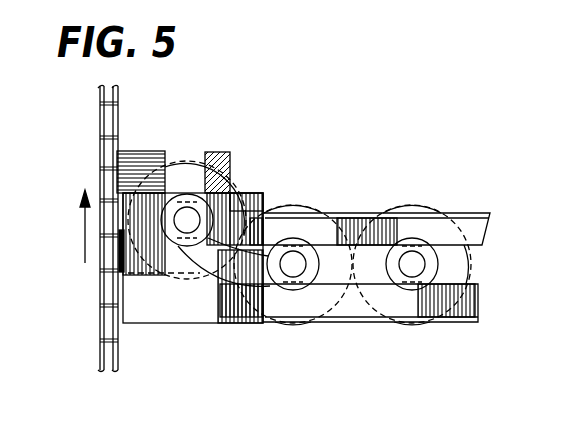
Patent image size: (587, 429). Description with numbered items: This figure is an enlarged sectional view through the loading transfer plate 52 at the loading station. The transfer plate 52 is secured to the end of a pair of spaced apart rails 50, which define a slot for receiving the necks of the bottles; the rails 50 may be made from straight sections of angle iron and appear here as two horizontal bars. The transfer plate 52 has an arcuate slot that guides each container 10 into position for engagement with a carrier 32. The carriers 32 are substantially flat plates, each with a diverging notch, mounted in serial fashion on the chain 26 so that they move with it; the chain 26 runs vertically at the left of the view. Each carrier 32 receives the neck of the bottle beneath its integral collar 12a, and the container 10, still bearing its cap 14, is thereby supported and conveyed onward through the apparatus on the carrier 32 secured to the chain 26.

The container 10 is at (376, 238).
The collar 12a is at (156, 250).
The cap 14 is at (187, 220).
The chain 26 is at (100, 132).
The carrier 32 is at (217, 152).
The rails 50 is at (483, 222).
The transfer plate 52 is at (250, 192).